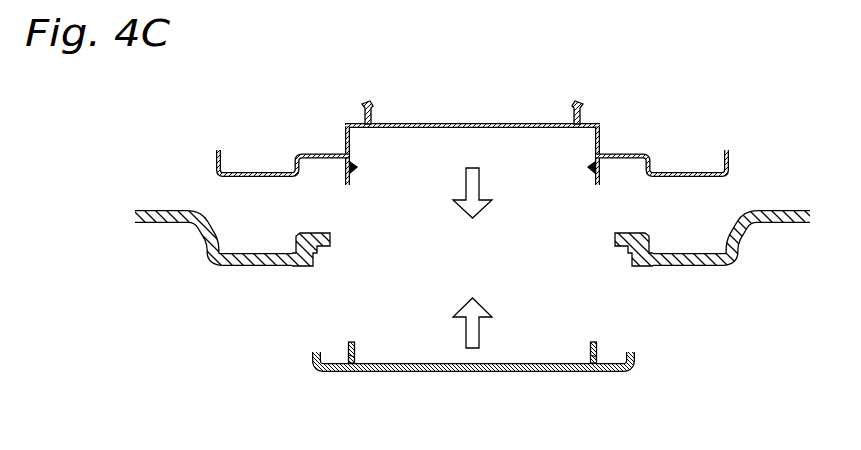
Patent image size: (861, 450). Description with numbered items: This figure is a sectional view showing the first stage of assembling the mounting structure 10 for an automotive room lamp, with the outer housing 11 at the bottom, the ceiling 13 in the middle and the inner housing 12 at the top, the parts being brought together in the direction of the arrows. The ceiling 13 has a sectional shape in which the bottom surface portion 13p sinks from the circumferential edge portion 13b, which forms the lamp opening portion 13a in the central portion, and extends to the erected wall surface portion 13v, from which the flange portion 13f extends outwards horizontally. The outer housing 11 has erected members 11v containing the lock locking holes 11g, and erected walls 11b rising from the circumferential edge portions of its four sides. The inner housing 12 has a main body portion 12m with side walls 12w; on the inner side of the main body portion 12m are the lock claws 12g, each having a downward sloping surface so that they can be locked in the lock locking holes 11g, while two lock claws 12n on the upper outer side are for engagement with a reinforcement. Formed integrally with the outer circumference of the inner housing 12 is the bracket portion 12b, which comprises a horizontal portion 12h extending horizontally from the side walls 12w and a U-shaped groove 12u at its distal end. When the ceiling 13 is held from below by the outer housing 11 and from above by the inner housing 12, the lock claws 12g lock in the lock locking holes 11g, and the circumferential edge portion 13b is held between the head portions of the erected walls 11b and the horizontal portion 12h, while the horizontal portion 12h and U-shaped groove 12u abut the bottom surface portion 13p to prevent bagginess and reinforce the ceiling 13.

The mounting structure 10 is at (121, 158).
The outer housing 11 is at (606, 374).
The erected walls 11b is at (314, 353).
The erected members 11v is at (354, 343).
The lock locking holes 11g is at (356, 356).
The inner housing 12 is at (728, 154).
The bracket portion 12b is at (318, 92).
The U-shaped groove 12u is at (247, 172).
The horizontal portion 12h is at (312, 152).
The lock claws 12n is at (366, 102).
The main body portion 12m is at (478, 122).
The side walls 12w is at (612, 39).
The lock claws 12g is at (357, 169).
The ceiling 13 is at (751, 232).
The flange portion 13f is at (170, 209).
The wall surface portion 13v is at (219, 231).
The bottom surface portion 13p is at (268, 252).
The lamp opening portion 13a is at (615, 240).
The circumferential edge portion 13b is at (330, 256).